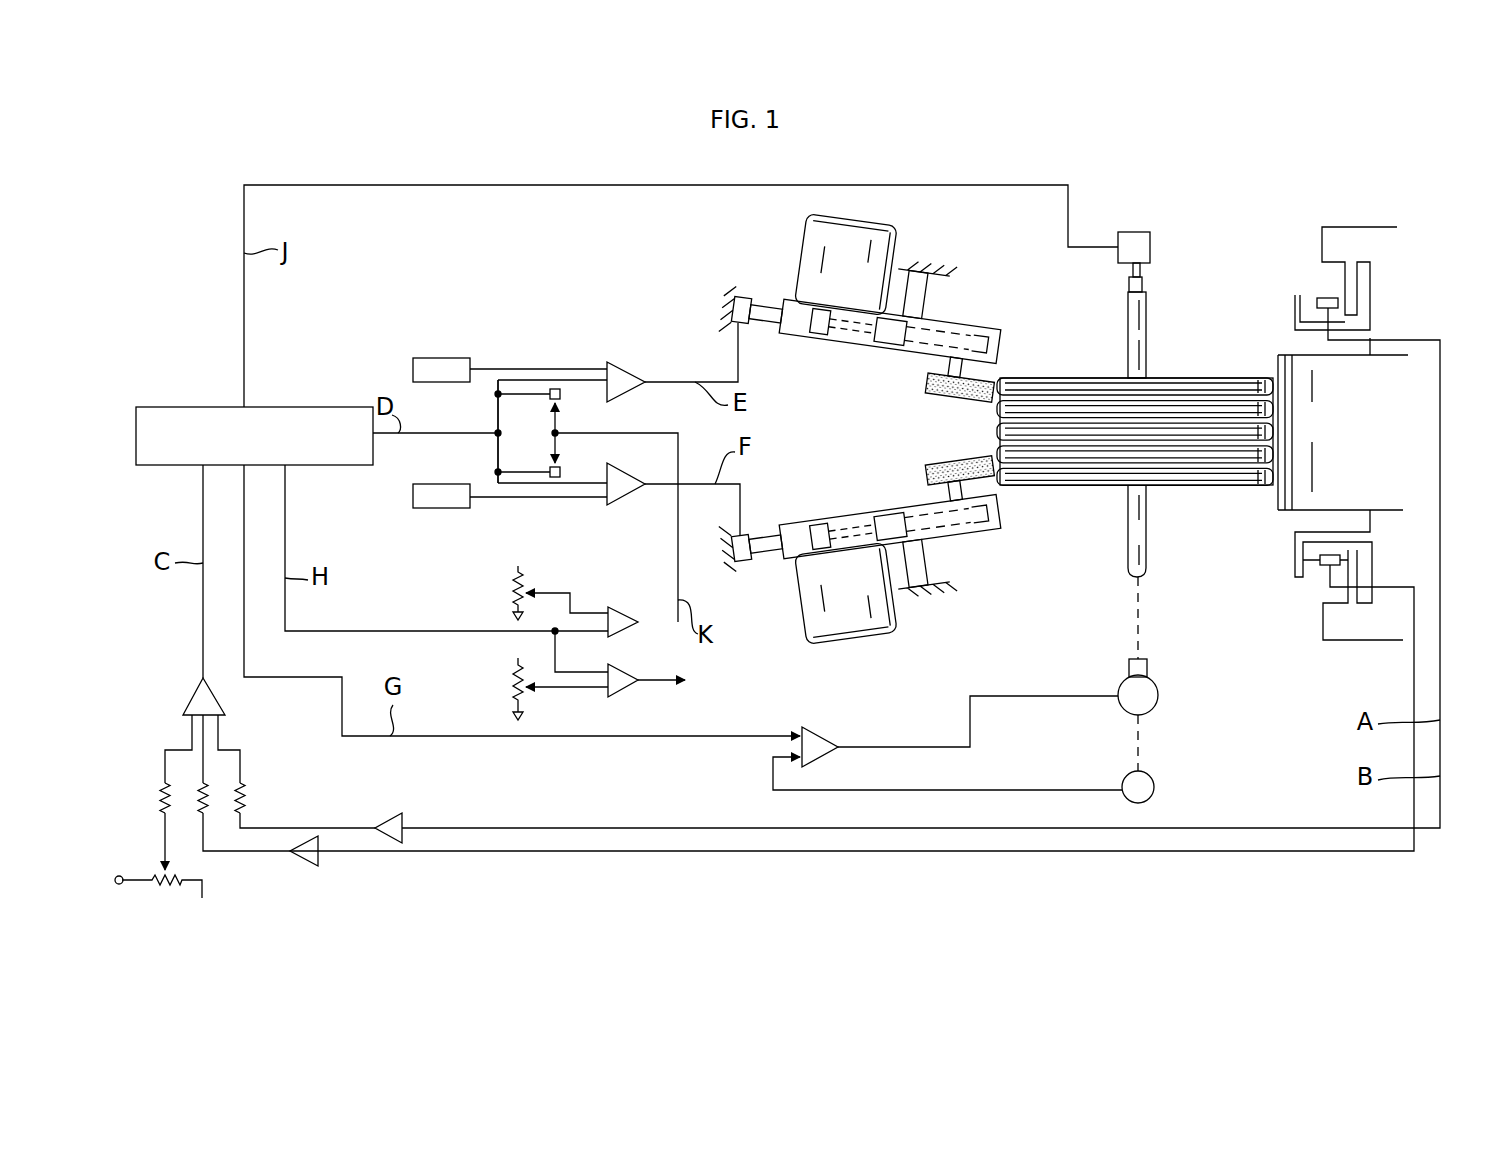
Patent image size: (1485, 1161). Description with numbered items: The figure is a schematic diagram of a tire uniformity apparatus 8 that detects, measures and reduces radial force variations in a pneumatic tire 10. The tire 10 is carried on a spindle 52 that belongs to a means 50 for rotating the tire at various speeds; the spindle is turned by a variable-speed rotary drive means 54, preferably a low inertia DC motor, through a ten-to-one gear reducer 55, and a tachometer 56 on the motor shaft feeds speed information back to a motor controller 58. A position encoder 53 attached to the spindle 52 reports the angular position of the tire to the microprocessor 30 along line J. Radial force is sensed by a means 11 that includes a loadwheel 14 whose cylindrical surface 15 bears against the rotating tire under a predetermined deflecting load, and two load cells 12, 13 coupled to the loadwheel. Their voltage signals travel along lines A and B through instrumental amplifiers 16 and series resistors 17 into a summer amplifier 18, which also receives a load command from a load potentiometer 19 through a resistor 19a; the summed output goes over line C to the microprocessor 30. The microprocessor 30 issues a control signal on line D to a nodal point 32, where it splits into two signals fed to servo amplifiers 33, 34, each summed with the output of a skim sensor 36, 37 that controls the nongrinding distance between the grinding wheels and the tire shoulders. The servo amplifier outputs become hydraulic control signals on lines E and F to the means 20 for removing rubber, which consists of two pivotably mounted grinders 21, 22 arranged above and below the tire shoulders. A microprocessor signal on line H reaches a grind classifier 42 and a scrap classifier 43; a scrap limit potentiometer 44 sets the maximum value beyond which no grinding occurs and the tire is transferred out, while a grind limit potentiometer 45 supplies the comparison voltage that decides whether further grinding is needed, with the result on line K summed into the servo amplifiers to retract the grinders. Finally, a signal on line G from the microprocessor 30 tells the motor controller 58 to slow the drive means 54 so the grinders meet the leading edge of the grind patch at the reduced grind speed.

The tire uniformity apparatus 8 is at (1247, 150).
The pneumatic tire 10 is at (1195, 378).
The means to detect and measure radial force variations 11 is at (1270, 335).
The load cell 12 is at (1328, 298).
The load cell 13 is at (1325, 566).
The loadwheel 14 is at (1295, 520).
The cylindrical surface 15 is at (1278, 500).
The instrumental amplifier 16 is at (385, 815).
The series resistor 17 is at (240, 790).
The summer amplifier 18 is at (222, 705).
The load potentiometer 19 is at (165, 888).
The resistor 19a is at (163, 795).
The means to remove rubber 20 is at (864, 307).
The grinder 21 is at (818, 397).
The grinder 22 is at (864, 551).
The microprocessor 30 is at (172, 407).
The nodal point 32 is at (498, 433).
The servo amplifier 33 is at (624, 362).
The servo amplifier 34 is at (622, 498).
The skim sensor 36 is at (413, 370).
The skim sensor 37 is at (413, 497).
The grind classifier 42 is at (618, 608).
The scrap classifier 43 is at (628, 690).
The scrap limit potentiometer 44 is at (512, 680).
The grind limit potentiometer 45 is at (512, 583).
The means for rotating the tire 50 is at (1100, 668).
The spindle 52 is at (1128, 325).
The position encoder 53 is at (1150, 245).
The variable-speed rotary drive means 54 is at (1158, 698).
The gear reducer 55 is at (1147, 668).
The tachometer 56 is at (1154, 787).
The motor controller 58 is at (825, 752).